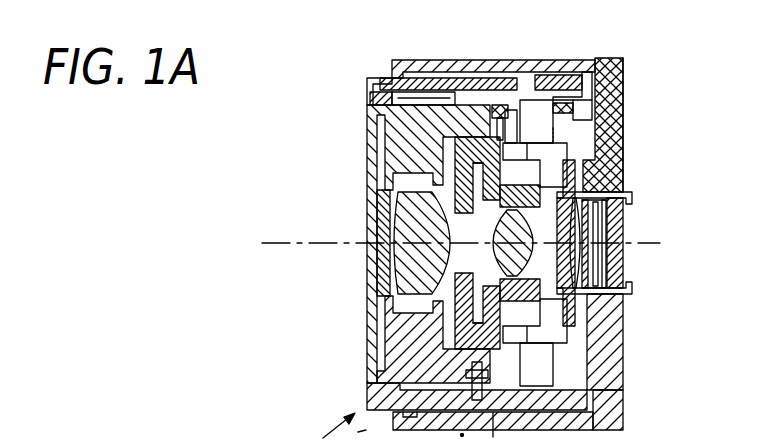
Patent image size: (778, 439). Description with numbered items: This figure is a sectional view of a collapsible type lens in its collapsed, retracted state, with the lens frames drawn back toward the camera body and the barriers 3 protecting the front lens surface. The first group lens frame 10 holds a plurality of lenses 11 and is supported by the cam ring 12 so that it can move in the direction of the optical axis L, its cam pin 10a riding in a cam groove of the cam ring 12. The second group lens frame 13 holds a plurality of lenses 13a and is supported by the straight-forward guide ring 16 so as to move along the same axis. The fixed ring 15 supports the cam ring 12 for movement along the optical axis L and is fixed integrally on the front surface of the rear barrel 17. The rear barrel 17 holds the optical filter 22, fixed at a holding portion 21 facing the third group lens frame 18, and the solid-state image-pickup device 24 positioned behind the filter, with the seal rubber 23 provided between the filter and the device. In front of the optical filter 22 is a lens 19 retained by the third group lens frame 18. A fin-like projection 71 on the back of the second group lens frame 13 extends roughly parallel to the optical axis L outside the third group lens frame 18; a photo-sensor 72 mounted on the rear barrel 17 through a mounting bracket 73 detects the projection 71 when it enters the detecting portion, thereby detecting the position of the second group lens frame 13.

The barriers 3 is at (377, 227).
The first group lens frame 10 is at (367, 133).
The cam pin 10a is at (521, 59).
The lenses 11 is at (377, 190).
The cam ring 12 is at (403, 59).
The second group lens frame 13 is at (624, 108).
The lenses 13a is at (600, 172).
The fixed ring 15 is at (448, 58).
The straight-forward guide ring 16 is at (477, 59).
The rear barrel 17 is at (614, 391).
The third group lens frame 18 is at (582, 158).
The lens 19 is at (626, 263).
The holding portion 21 is at (620, 324).
The optical filter 22 is at (592, 240).
The seal rubber 23 is at (634, 203).
The solid-state image-pickup device 24 is at (634, 232).
The fin-like projection 71 is at (560, 78).
The photo-sensor 72 is at (588, 58).
The mounting bracket 73 is at (624, 86).
The optical axis L is at (275, 242).